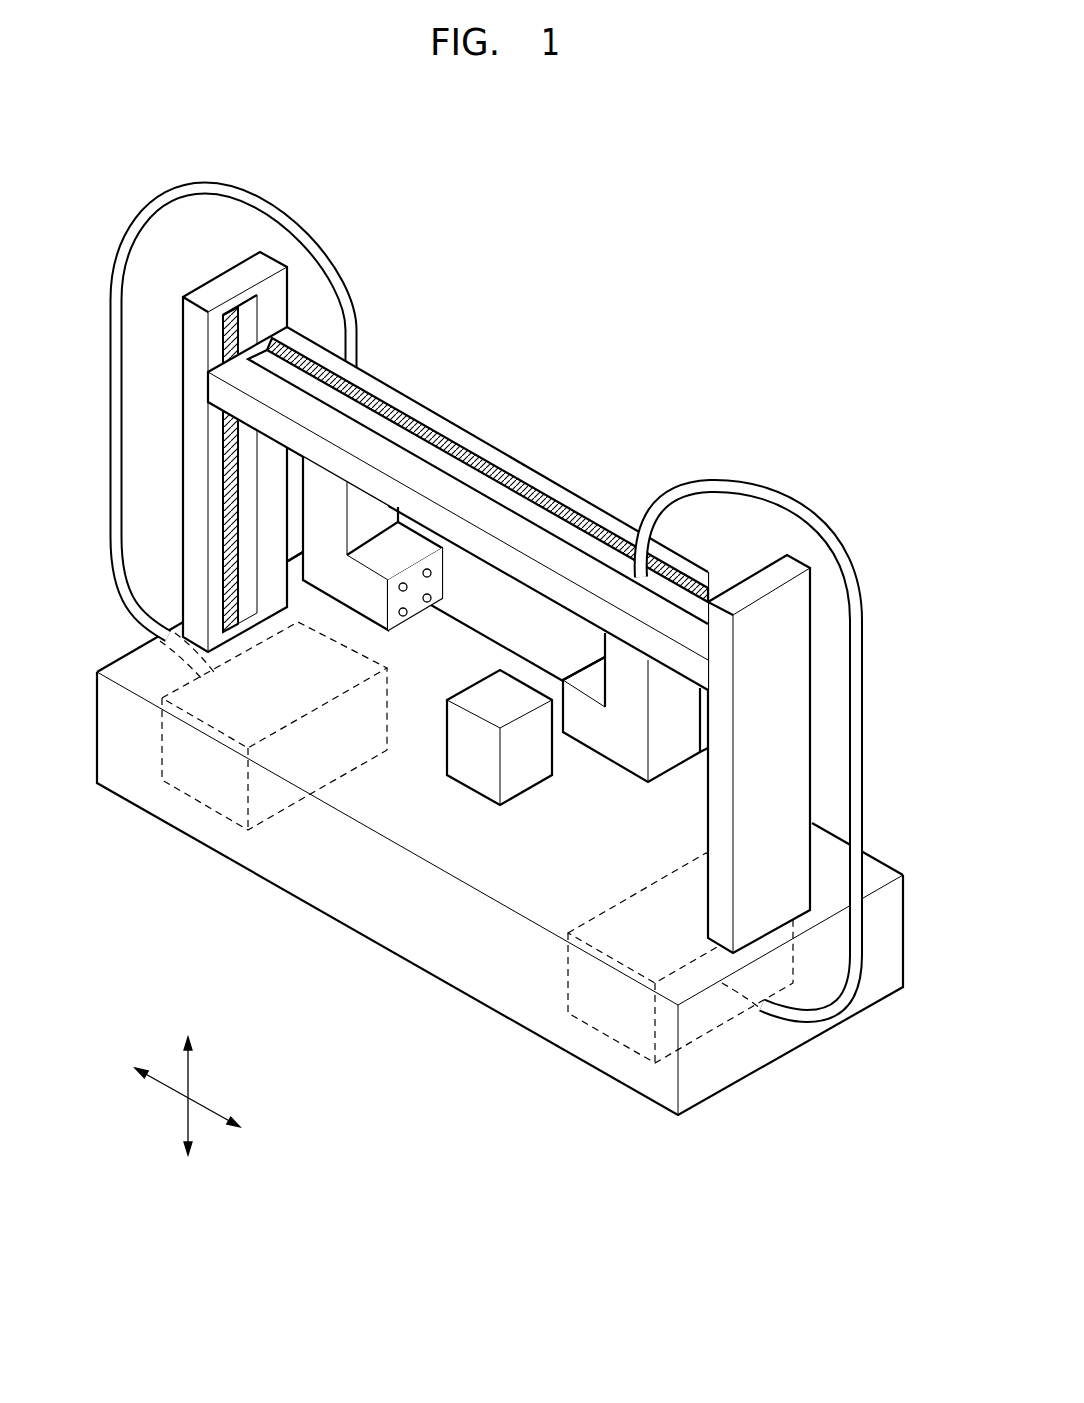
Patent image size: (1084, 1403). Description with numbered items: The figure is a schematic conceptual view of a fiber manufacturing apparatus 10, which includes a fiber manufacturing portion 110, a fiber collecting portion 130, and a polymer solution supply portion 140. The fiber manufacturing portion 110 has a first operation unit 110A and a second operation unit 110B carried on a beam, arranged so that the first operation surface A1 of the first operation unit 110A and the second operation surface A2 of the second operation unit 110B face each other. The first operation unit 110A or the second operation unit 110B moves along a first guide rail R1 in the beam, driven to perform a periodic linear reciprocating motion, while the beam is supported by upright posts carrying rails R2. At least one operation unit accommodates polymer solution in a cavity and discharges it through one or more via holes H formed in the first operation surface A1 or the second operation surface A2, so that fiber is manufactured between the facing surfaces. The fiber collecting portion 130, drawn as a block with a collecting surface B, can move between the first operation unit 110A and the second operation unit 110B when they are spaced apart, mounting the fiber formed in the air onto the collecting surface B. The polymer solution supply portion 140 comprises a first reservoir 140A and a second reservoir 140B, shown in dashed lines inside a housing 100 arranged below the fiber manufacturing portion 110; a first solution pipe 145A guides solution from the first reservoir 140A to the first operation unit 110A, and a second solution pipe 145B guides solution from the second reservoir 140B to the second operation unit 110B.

The fiber manufacturing apparatus 10 is at (754, 245).
The housing 100 is at (732, 1070).
The fiber manufacturing portion 110 is at (458, 525).
The first operation unit 110A is at (392, 480).
The second operation unit 110B is at (617, 584).
The first guide rail R1 is at (527, 470).
The second rail (pillar) R2 is at (245, 273).
The fiber collecting portion 130 is at (455, 834).
The collecting surface B is at (495, 698).
The polymer solution supply portion 140 is at (493, 1102).
The first reservoir 140A is at (197, 800).
The second reservoir 140B is at (603, 1033).
The first solution pipe 145A is at (158, 198).
The second solution pipe 145B is at (830, 553).
The via hole H is at (429, 576).
The first operation surface A1 is at (442, 609).
The second operation surface A2 is at (563, 682).